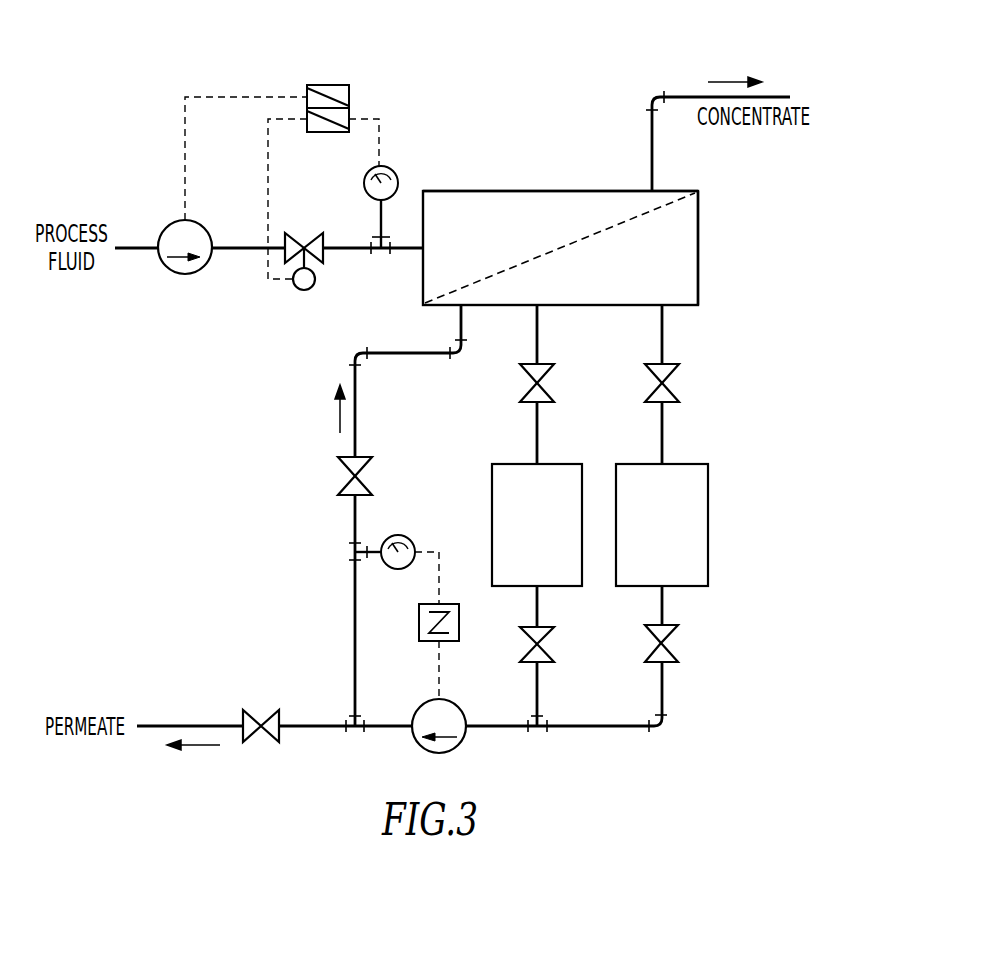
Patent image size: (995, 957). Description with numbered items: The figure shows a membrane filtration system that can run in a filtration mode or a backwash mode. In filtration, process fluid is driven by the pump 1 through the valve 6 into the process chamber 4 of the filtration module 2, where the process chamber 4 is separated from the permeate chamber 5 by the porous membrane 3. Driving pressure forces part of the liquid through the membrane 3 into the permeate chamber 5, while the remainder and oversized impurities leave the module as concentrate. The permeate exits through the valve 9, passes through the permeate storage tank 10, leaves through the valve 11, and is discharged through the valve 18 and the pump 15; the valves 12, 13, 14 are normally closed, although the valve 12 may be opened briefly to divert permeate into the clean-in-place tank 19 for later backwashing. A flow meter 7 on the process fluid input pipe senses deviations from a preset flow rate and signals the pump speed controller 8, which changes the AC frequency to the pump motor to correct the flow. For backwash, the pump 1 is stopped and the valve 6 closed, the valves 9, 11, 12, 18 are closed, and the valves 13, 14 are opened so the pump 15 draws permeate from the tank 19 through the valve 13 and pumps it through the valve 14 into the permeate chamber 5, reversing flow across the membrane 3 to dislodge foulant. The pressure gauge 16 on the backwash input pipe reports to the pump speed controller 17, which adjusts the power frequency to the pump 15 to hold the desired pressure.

The pump 1 is at (166, 228).
The filtration module 2 is at (460, 191).
The porous membrane 3 is at (545, 255).
The process chamber 4 is at (595, 200).
The permeate chamber 5 is at (690, 255).
The valve 6 is at (300, 233).
The flow meter 7 is at (394, 170).
The pump speed controller 8 is at (330, 85).
The valve 9 is at (672, 383).
The permeate storage tank 10 is at (708, 490).
The valve 11 is at (675, 643).
The valve 12 is at (548, 383).
The valve 13 is at (528, 640).
The valve 14 is at (348, 455).
The pump 15 is at (458, 745).
The pressure gauge 16 is at (392, 536).
The pump speed controller 17 is at (419, 616).
The valve 18 is at (262, 742).
The clean-in-place tank 19 is at (492, 490).